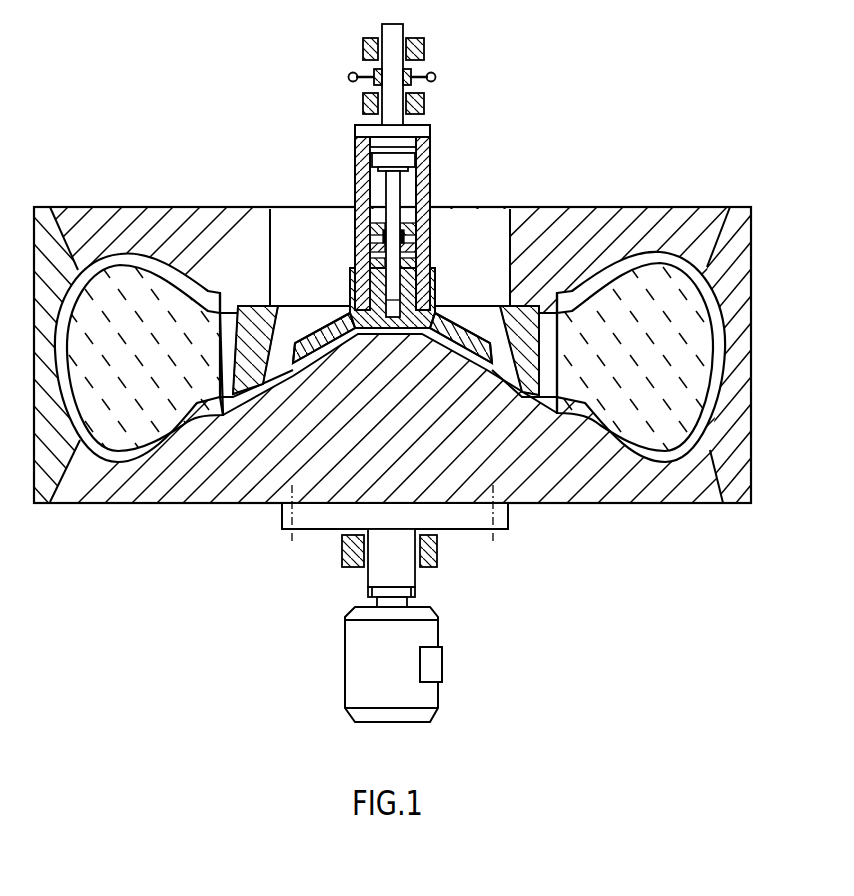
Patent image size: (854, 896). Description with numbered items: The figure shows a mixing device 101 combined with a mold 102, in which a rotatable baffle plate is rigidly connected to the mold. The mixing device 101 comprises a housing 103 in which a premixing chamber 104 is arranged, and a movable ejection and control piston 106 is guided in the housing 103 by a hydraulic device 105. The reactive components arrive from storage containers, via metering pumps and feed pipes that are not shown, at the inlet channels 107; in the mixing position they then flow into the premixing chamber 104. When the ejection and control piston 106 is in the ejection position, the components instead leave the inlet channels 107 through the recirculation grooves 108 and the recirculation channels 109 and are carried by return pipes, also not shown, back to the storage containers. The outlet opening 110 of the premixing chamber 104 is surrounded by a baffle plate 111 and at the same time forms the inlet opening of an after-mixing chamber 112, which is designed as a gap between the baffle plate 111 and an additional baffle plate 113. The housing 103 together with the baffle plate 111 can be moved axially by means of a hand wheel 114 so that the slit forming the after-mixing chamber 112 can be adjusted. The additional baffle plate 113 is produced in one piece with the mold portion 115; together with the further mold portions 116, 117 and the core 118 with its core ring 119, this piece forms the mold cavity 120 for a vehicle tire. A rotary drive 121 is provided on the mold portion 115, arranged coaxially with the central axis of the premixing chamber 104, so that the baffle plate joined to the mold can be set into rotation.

The mixing device 101 is at (438, 128).
The mold 102 is at (674, 507).
The housing 103 is at (358, 162).
The premixing chamber 104 is at (392, 284).
The hydraulic device 105 is at (408, 183).
The ejection and control piston 106 is at (388, 193).
The inlet channels 107 is at (370, 262).
The recirculation grooves 108 is at (360, 225).
The recirculation channels 109 is at (370, 237).
The outlet opening 110 is at (398, 318).
The baffle plate 111 is at (326, 335).
The after-mixing chamber 112 is at (417, 357).
The additional baffle plate 113 is at (477, 393).
The hand wheel 114 is at (378, 72).
The mold portion 115 is at (230, 490).
The mold portion 116 is at (737, 248).
The mold portion 117 is at (572, 225).
The core 118 is at (153, 418).
The core ring 119 is at (248, 373).
The mold cavity 120 is at (568, 410).
The rotary drive 121 is at (353, 643).